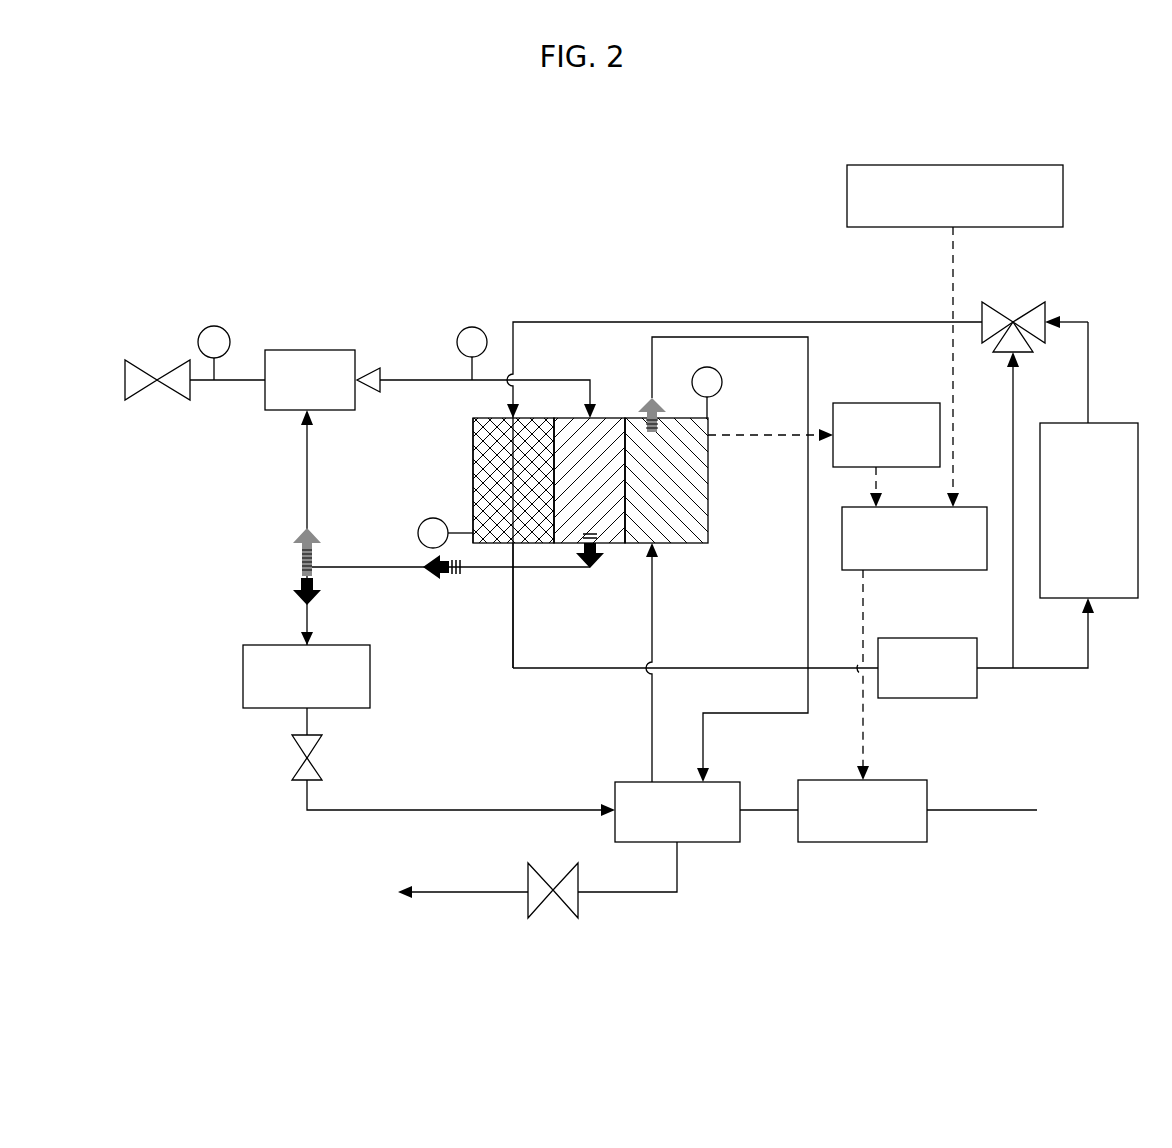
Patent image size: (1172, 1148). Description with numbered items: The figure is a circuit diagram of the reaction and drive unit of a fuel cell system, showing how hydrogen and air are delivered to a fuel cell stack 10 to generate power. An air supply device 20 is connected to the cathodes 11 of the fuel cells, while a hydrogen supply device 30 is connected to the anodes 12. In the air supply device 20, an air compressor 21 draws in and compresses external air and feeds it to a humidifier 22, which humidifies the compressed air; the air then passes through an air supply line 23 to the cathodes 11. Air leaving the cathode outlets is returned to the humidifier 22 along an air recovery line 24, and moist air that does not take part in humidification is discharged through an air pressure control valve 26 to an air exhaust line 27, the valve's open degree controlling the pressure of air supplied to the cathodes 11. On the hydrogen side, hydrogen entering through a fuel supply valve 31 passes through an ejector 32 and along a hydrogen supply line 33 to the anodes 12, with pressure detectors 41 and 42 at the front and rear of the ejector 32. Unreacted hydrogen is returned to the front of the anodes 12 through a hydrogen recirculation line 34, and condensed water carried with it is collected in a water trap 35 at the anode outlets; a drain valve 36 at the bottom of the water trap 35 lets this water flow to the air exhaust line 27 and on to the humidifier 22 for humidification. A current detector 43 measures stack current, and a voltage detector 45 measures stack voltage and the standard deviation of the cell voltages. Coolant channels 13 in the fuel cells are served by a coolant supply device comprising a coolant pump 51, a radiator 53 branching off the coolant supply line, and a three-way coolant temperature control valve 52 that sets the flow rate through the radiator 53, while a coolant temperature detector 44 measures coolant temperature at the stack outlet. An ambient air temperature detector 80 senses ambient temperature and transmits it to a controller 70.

The fuel cell stack 10 is at (676, 408).
The cathodes 11 is at (708, 455).
The anodes 12 is at (605, 427).
The coolant channels 13 is at (473, 452).
The air supply device 20 is at (750, 858).
The air compressor 21 is at (868, 844).
The humidifier 22 is at (613, 787).
The air supply line 23 is at (652, 603).
The air recovery line 24 is at (735, 337).
The air pressure control valve 26 is at (562, 905).
The air exhaust line 27 is at (470, 893).
The hydrogen supply device 30 is at (243, 362).
The fuel supply valve 31 is at (145, 366).
The ejector 32 is at (278, 412).
The hydrogen supply line 33 is at (402, 380).
The hydrogen recirculation line 34 is at (307, 512).
The water trap 35 is at (243, 675).
The drain valve 36 is at (295, 782).
The pressure detector 41 is at (214, 326).
The pressure detector 42 is at (472, 327).
The current detector 43 is at (722, 382).
The coolant temperature detector 44 is at (418, 533).
The voltage detector 45 is at (876, 403).
The coolant pump 51 is at (940, 700).
The coolant temperature control valve 52 is at (997, 306).
The radiator 53 is at (1118, 423).
The controller 70 is at (920, 572).
The ambient air temperature detector 80 is at (1063, 188).